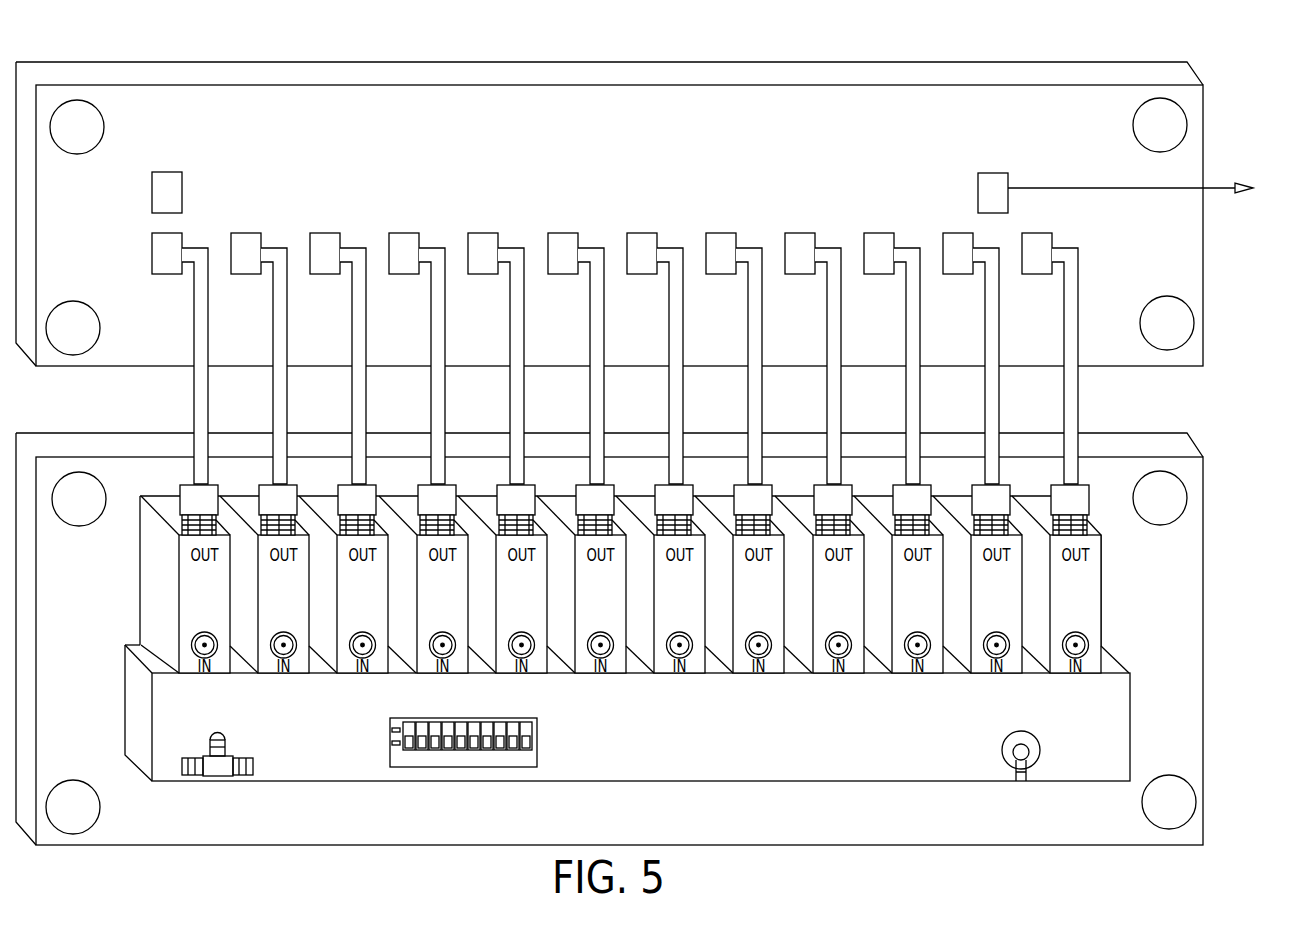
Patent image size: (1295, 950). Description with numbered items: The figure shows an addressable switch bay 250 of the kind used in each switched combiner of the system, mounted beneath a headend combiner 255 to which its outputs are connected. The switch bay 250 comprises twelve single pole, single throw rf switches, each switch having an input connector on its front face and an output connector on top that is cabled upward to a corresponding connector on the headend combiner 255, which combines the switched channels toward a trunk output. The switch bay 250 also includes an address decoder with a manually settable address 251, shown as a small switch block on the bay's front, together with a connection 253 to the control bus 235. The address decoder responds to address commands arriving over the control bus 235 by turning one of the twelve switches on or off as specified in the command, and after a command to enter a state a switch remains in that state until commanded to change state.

The headend combiner 255 is at (1203, 284).
The addressable switch bay 250 is at (645, 639).
The manually settable address 251 is at (392, 768).
The control bus 235 is at (182, 767).
The connection to the control bus 253 is at (223, 773).